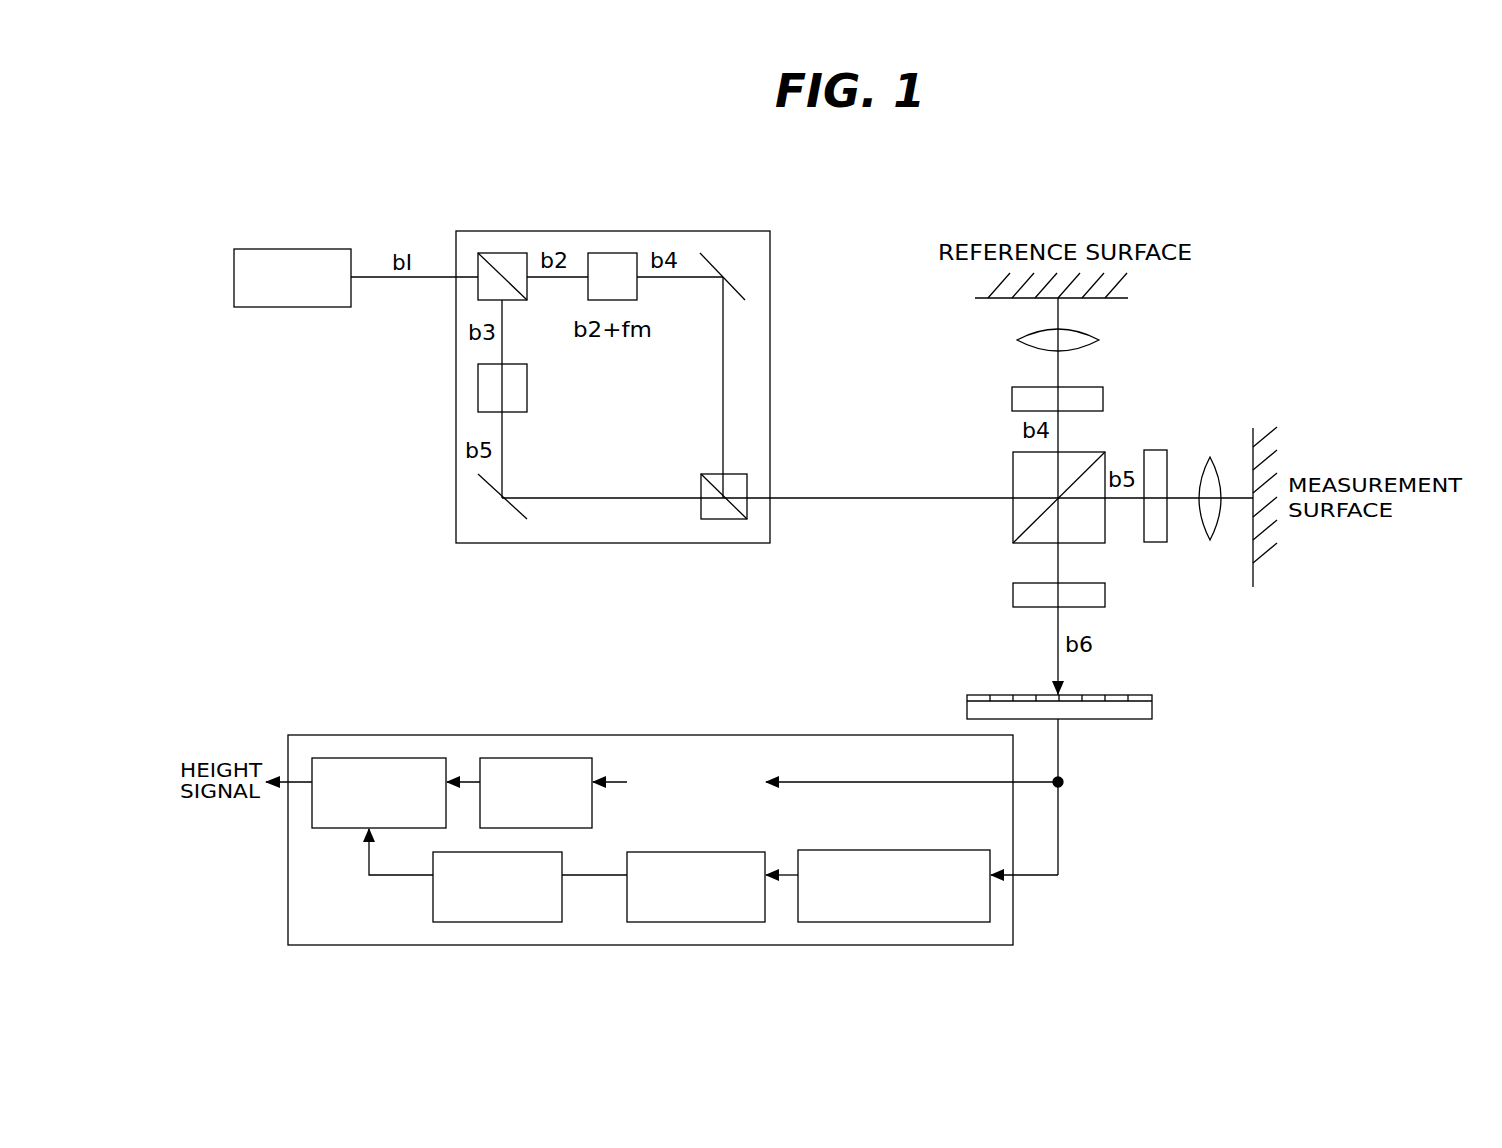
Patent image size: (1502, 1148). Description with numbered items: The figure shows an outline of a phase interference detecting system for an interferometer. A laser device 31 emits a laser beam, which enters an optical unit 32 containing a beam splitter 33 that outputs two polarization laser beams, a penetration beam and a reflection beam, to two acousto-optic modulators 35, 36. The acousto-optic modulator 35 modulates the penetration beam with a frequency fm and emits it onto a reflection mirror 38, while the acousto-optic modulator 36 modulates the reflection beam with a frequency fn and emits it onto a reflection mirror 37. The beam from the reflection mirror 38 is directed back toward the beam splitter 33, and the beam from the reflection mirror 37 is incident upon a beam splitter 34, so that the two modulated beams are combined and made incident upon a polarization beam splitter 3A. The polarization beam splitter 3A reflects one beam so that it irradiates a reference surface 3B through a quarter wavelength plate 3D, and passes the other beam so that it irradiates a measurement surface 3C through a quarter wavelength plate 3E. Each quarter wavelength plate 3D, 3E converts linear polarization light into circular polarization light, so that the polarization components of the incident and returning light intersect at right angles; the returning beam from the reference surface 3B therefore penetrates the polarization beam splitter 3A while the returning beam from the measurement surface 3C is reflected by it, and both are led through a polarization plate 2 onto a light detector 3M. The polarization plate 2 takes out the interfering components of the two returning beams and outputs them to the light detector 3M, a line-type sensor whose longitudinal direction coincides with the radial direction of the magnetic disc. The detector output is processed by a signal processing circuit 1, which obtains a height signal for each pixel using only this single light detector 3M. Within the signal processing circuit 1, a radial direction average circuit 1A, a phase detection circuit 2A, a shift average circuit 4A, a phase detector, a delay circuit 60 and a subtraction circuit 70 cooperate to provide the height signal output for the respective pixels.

The laser device 31 is at (286, 249).
The optical unit housing 32 is at (771, 262).
The beam splitter 33 is at (500, 253).
The beam splitter 34 is at (725, 519).
The acousto-optic modulator 35 is at (612, 253).
The acousto-optic modulator 36 is at (478, 388).
The reflection mirror 37 is at (518, 519).
The reflection mirror 38 is at (707, 253).
The polarization beam splitter 3A is at (1105, 543).
The reference surface 3B is at (1130, 297).
The measurement surface 3C is at (1253, 587).
The quarter wavelength plate 3D is at (1010, 397).
The quarter wavelength plate 3E is at (1156, 450).
The light detector 3M is at (967, 705).
The polarization plate 2 is at (1012, 596).
The signal processing circuit 1 is at (467, 735).
The radial direction average circuit 1A is at (990, 895).
The phase detection circuit 2A is at (627, 906).
The shift average circuit 4A is at (433, 906).
The delay circuit 60 is at (727, 802).
The subtraction circuit 70 is at (376, 758).